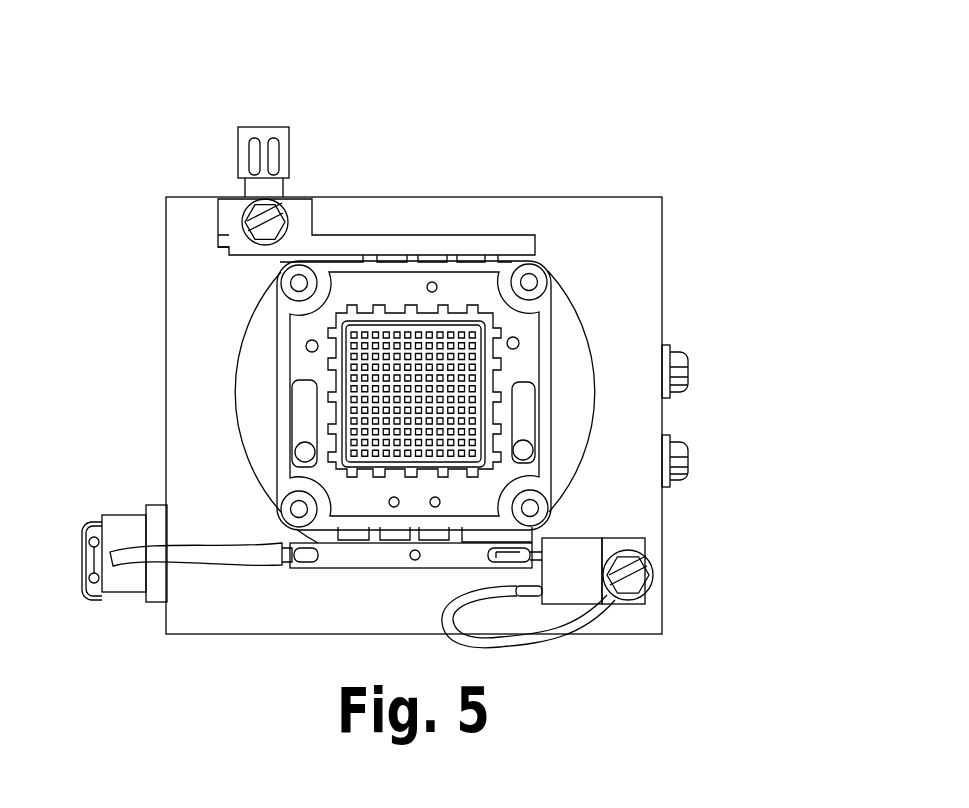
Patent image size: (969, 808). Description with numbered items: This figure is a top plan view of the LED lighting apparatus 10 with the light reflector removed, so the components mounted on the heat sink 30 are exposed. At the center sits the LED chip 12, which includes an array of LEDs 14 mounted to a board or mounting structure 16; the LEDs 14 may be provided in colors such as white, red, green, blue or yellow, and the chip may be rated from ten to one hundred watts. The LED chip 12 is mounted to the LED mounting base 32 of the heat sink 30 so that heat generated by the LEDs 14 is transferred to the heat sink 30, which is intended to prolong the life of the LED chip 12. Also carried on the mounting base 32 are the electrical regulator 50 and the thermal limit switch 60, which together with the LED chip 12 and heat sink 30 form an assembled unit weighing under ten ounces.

The LED lighting apparatus 10 is at (527, 62).
The LED chip 12 is at (405, 234).
The LED 14 is at (366, 408).
The board or mounting structure 16 is at (455, 283).
The heat sink 30 is at (588, 185).
The LED mounting base 32 is at (630, 245).
The electrical regulator 50 is at (637, 526).
The thermal limit switch 60 is at (100, 488).